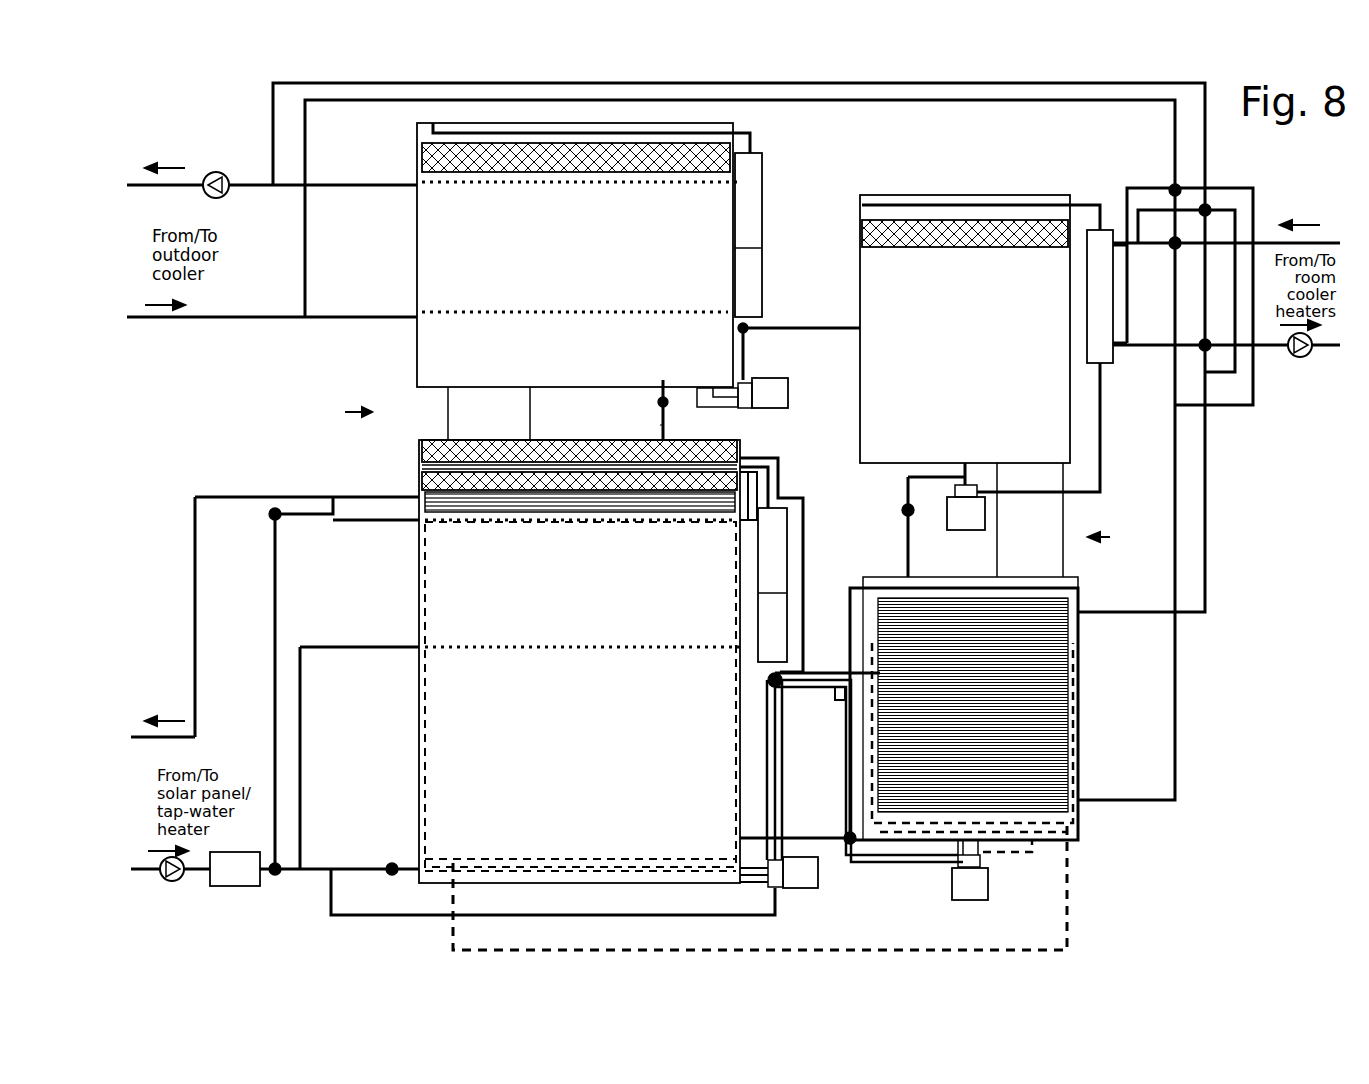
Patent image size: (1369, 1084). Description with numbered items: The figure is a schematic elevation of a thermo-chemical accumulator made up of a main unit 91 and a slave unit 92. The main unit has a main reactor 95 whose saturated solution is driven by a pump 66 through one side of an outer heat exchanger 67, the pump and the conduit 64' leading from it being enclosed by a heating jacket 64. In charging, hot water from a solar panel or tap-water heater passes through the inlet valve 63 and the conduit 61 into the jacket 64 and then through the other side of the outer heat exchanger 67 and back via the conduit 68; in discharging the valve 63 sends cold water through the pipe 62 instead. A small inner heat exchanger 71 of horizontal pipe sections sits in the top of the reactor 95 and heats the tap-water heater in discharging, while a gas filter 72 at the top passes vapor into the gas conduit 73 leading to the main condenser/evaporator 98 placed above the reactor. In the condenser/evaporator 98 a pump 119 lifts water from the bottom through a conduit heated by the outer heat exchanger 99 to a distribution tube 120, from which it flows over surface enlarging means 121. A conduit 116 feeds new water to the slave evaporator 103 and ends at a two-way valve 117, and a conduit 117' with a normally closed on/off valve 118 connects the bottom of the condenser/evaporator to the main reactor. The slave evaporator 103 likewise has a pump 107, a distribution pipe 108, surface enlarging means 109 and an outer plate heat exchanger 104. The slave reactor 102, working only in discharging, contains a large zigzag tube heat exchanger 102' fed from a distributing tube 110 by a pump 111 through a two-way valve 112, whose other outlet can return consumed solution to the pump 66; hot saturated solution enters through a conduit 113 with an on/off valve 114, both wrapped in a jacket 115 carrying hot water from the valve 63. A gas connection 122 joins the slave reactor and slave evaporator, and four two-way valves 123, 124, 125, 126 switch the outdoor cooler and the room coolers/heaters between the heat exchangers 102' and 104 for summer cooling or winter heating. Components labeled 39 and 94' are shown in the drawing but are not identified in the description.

The junction 39 is at (910, 527).
The conduit 61 is at (317, 862).
The pipe 62 is at (274, 712).
The inlet valve 63 is at (281, 876).
The heating jacket 64 is at (803, 793).
The conduit from the pump 64' is at (804, 768).
The pump 66 is at (778, 890).
The outer heat exchanger 67 is at (772, 585).
The conduit 68 is at (570, 465).
The inner heat exchanger 71 is at (422, 448).
The gas filter 72 is at (422, 484).
The gas conduit 73 is at (474, 413).
The main unit 91 is at (344, 413).
The slave unit 92 is at (1115, 536).
The pump 94' is at (174, 890).
The main reactor 95 is at (419, 588).
The main condenser/evaporator 98 is at (417, 254).
The outer heat exchanger 99 is at (748, 235).
The slave reactor 102 is at (991, 720).
The zigzag type tube heat exchanger 102' is at (1007, 705).
The slave evaporator 103 is at (860, 394).
The heat exchanger 104 is at (1113, 357).
The pump 107 is at (955, 493).
The distribution pipe 108 is at (967, 204).
The surface enlarging means 109 is at (968, 247).
The distributing tube 110 is at (958, 585).
The pump 111 is at (982, 860).
The two-way valve 112 is at (848, 834).
The conduit 113 is at (822, 672).
The on/off valve 114 is at (783, 690).
The jacket 115 is at (815, 704).
The conduit 116 is at (817, 327).
The two-way valve 117 is at (768, 351).
The conduit 117' is at (630, 426).
The on/off valve 118 is at (658, 402).
The pump 119 is at (745, 408).
The distribution tube 120 is at (433, 128).
The surface enlarging means 121 is at (422, 160).
The gas conduit 122 is at (1030, 520).
The two-way valve 123 is at (1178, 249).
The two-way valve 124 is at (1203, 340).
The two-way valve 125 is at (1170, 186).
The two-way valve 126 is at (1208, 206).